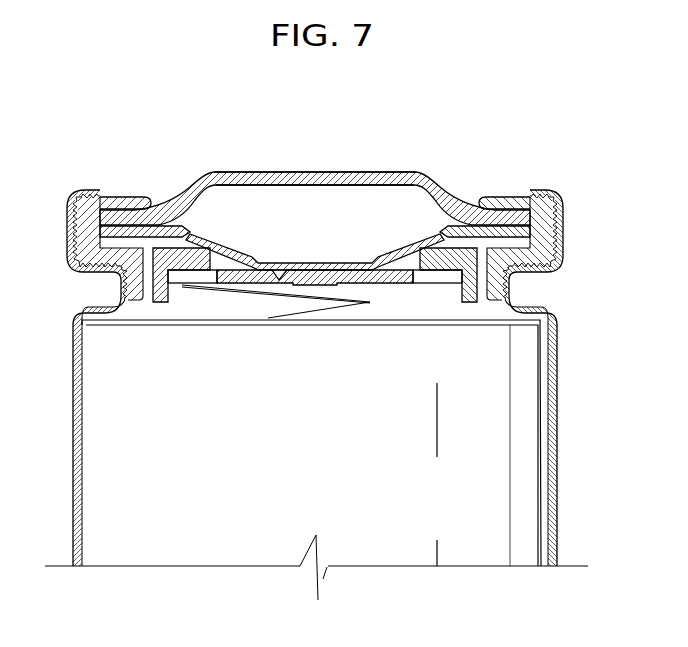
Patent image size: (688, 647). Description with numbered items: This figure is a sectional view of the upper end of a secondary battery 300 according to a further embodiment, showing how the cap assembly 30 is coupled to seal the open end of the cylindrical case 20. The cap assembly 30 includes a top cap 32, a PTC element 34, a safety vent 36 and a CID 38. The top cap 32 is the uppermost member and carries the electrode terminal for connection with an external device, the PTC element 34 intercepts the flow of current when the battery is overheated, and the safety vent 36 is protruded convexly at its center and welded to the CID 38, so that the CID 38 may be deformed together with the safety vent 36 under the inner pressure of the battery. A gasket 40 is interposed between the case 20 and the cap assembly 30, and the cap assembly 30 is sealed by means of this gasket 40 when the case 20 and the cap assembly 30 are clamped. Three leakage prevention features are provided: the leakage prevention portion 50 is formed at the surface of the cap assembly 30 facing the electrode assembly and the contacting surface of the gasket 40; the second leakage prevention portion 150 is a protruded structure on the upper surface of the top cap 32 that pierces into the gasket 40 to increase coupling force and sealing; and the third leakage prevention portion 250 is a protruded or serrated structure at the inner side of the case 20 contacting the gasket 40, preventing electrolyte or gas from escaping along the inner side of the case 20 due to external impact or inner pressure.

The secondary battery 300 is at (497, 122).
The cap assembly 30 is at (315, 175).
The top cap 32 is at (314, 172).
The PTC element 34 is at (191, 232).
The safety vent 36 is at (247, 254).
The CID 38 is at (318, 267).
The gasket 40 is at (503, 190).
The cylindrical case 20 is at (560, 190).
The leakage prevention portion 50 is at (94, 270).
The second leakage prevention portion 150 is at (124, 200).
The third leakage prevention portion 250 is at (133, 309).